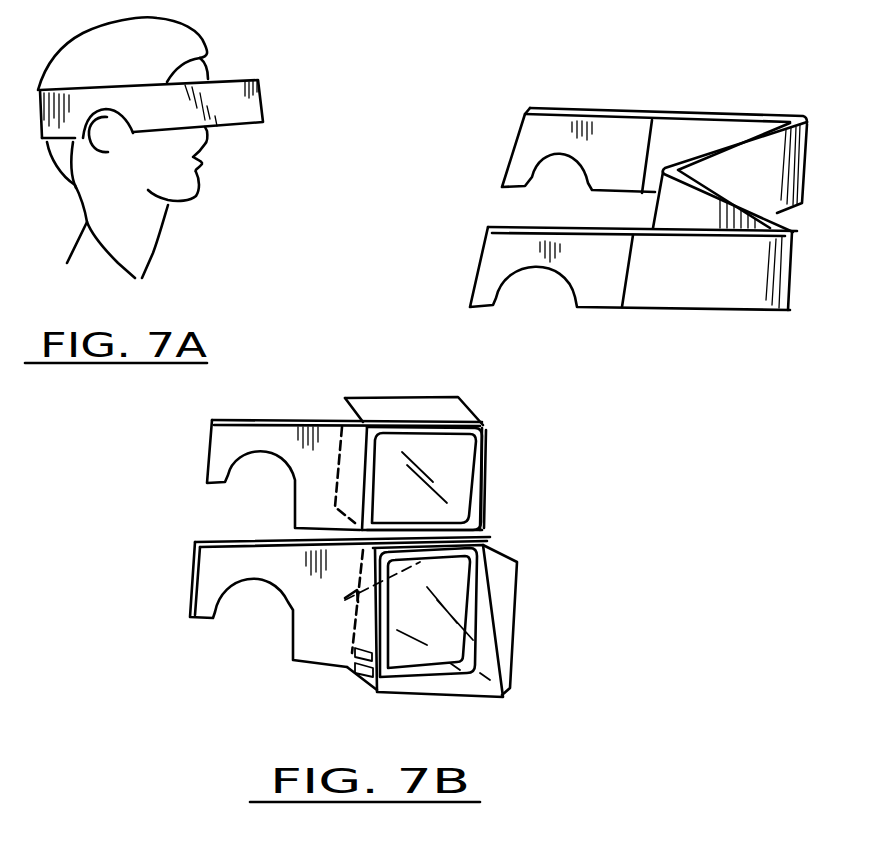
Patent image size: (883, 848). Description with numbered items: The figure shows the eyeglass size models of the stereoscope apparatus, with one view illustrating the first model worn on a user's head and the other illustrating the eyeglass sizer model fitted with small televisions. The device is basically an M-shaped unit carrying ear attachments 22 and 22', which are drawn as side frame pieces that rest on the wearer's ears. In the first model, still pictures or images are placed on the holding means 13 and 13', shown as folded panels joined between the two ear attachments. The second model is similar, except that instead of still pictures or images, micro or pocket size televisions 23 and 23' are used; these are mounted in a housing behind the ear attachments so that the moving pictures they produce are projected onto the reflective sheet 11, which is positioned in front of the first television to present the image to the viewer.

The reflective sheet 11 is at (402, 417).
The holding means 13 is at (730, 136).
The holding means 13' is at (742, 313).
The ear attachment 22 is at (507, 276).
The ear attachment 22' is at (452, 412).
The pocket size television 23 is at (490, 472).
The pocket size television 23' is at (495, 621).